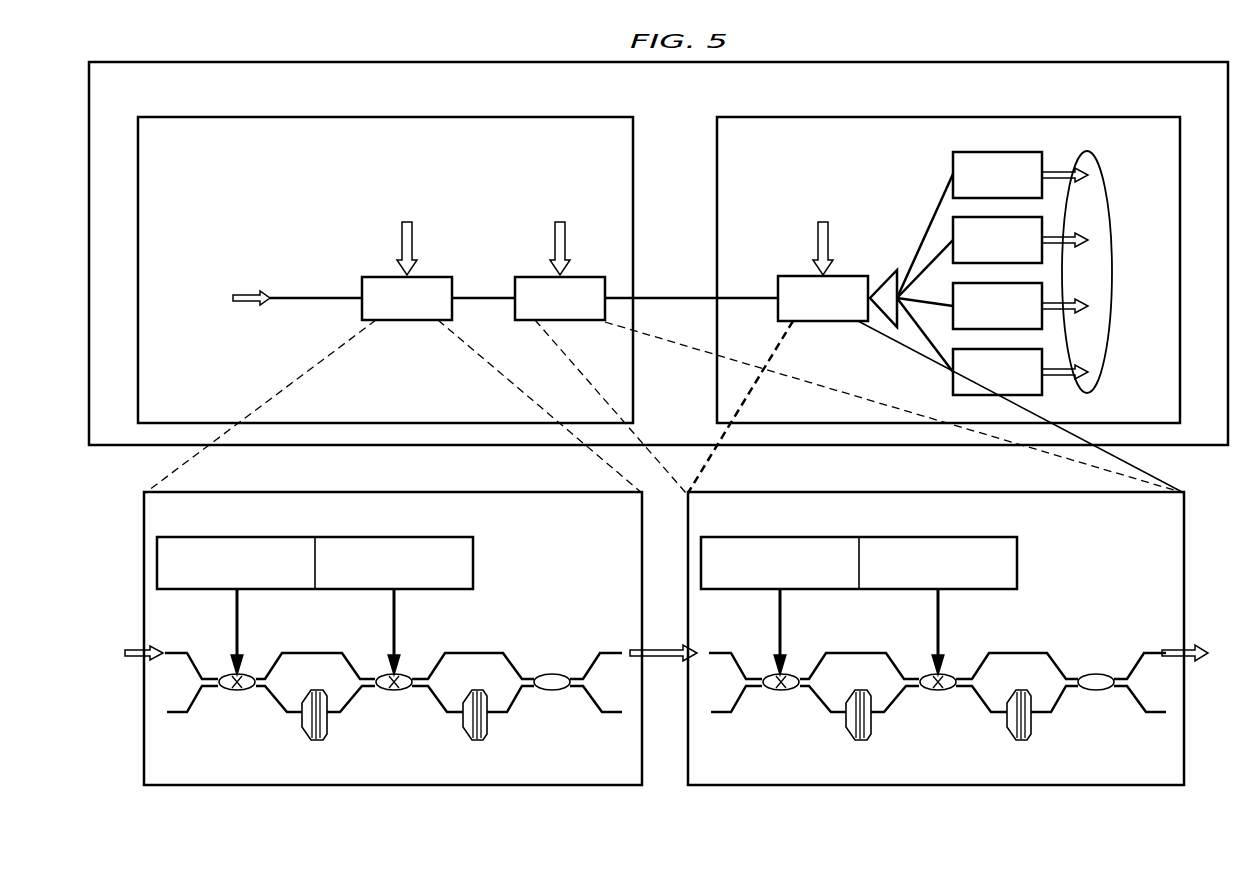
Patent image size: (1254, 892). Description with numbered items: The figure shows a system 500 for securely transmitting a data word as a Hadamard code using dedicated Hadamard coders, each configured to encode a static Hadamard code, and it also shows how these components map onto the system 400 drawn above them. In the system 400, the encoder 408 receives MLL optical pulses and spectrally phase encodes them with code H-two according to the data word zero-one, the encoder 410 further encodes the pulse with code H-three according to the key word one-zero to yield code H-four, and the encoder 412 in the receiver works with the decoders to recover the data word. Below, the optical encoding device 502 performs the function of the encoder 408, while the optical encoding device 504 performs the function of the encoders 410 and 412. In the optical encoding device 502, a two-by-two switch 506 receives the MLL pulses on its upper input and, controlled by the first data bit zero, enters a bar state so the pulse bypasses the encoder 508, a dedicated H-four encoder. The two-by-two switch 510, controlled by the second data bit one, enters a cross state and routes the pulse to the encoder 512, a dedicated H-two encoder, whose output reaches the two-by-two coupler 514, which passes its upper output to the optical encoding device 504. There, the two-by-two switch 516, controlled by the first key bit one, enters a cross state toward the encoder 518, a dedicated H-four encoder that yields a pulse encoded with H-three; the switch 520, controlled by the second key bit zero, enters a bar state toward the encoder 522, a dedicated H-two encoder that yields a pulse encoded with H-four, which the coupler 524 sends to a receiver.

The system 400 is at (267, 93).
The encoder 408 is at (362, 312).
The encoder 410 is at (515, 312).
The encoder 412 is at (778, 312).
The system 500 is at (118, 831).
The optical encoding device 502 is at (144, 566).
The optical encoding device 504 is at (1184, 553).
The 2×2 switch 506 is at (235, 692).
The encoder 508 is at (300, 725).
The 2×2 switch 510 is at (398, 674).
The encoder 512 is at (462, 723).
The 2×2 coupler 514 is at (557, 621).
The 2×2 switch 516 is at (779, 692).
The encoder 518 is at (844, 725).
The 2×2 switch 520 is at (942, 674).
The encoder 522 is at (1006, 723).
The coupler 524 is at (1101, 621).